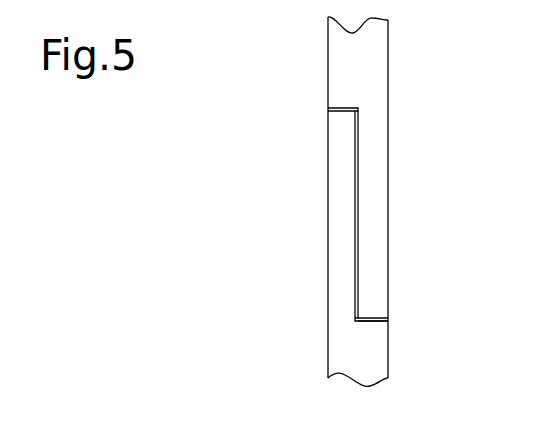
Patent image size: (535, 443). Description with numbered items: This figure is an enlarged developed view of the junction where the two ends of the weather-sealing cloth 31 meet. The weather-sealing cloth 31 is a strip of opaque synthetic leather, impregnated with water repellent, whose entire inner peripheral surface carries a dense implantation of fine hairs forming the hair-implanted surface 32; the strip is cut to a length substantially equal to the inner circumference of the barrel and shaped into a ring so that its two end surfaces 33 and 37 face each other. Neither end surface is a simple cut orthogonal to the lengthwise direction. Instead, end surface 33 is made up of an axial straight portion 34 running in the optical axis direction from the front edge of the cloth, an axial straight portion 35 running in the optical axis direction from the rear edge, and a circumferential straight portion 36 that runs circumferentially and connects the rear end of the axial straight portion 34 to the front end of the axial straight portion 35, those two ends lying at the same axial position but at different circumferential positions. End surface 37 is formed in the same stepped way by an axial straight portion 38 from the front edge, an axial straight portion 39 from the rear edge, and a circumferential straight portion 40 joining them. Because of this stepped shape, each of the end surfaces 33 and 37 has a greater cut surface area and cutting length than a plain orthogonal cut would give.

The weather-sealing cloth 31 is at (363, 201).
The hair-implanted surface 32 is at (378, 90).
The end surface 33 is at (362, 212).
The axial straight portion (first edge) 34 is at (339, 107).
The axial straight portion (second edge) 35 is at (368, 317).
The circumferential straight portion (connecting portion) 36 is at (357, 202).
The end surface 37 is at (355, 185).
The axial straight portion (first edge) 38 is at (337, 119).
The axial straight portion (second edge) 39 is at (370, 322).
The circumferential straight portion (connecting portion) 40 is at (355, 252).